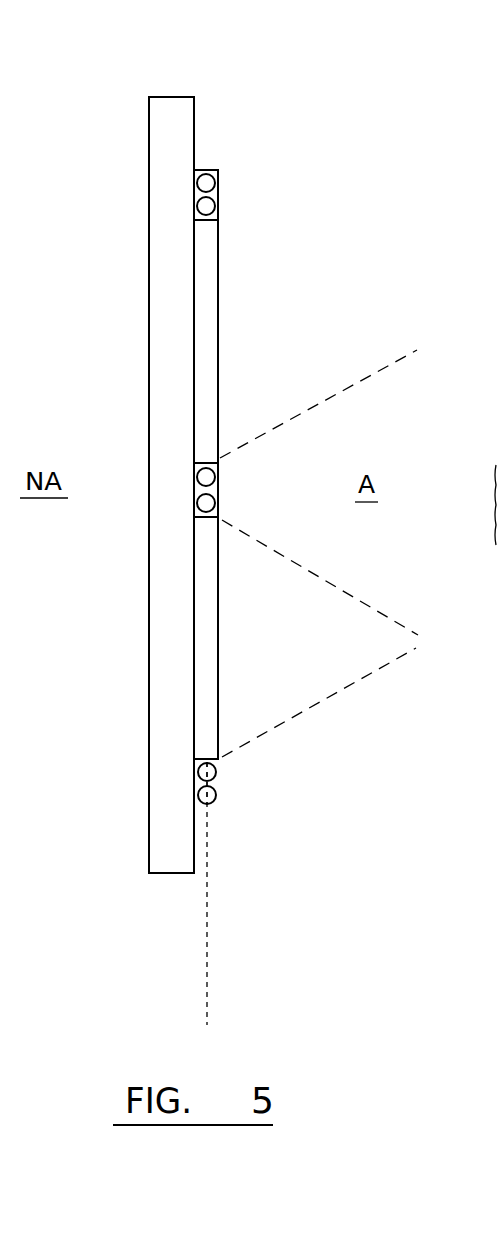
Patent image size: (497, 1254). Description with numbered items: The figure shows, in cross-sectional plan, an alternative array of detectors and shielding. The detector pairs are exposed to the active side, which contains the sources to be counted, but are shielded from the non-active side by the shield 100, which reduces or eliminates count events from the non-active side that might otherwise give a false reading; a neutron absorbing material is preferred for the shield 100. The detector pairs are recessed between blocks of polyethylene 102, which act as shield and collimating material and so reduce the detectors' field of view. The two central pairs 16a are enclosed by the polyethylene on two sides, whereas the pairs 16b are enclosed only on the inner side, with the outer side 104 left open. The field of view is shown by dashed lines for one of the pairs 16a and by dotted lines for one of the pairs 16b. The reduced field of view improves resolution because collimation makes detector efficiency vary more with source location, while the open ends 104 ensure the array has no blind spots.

The shield 100 is at (165, 592).
The blocks of polyethylene 102 is at (213, 278).
The outer side 104 is at (213, 158).
The central detector pairs 16a is at (228, 312).
The outer detector pairs 16b is at (233, 183).